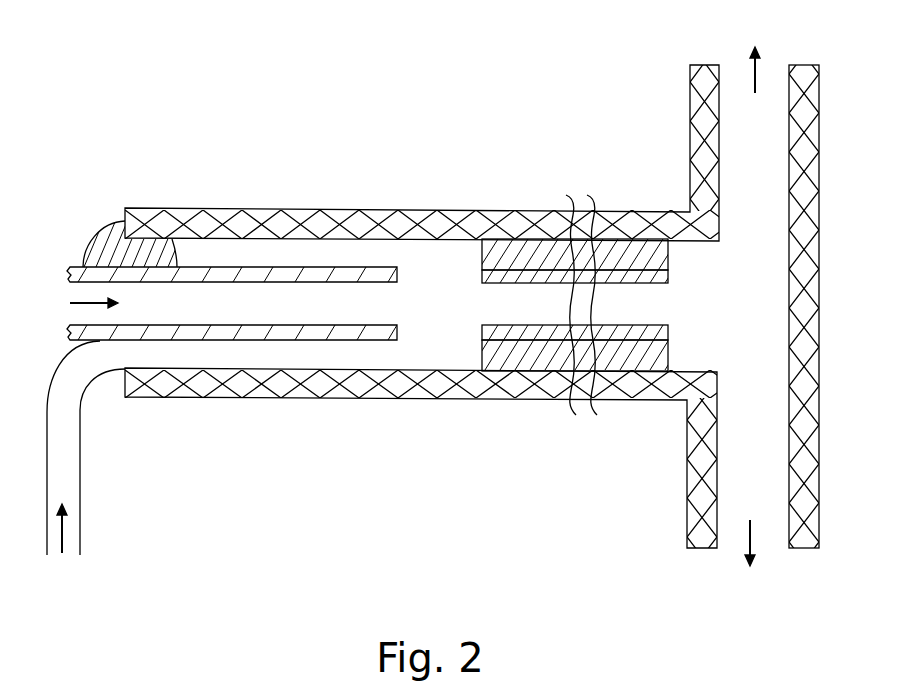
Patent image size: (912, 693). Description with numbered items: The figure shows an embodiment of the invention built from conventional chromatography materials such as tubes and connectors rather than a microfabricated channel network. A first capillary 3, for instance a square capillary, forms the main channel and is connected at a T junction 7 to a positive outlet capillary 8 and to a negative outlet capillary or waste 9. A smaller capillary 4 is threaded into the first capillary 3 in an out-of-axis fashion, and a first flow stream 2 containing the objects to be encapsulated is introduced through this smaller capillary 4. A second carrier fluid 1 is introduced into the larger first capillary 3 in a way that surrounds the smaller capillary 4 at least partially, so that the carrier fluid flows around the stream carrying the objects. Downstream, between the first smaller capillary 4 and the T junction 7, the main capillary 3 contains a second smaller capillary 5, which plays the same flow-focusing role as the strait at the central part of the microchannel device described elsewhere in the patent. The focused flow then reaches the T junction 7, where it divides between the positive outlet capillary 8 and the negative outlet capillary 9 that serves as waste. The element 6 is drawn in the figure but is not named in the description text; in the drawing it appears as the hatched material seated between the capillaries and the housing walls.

The second carrier fluid 1 is at (62, 532).
The first flow stream 2 is at (90, 300).
The first capillary 3 is at (211, 222).
The smaller capillary 4 is at (272, 268).
The second smaller capillary 5 is at (540, 268).
The insulating / sealing material 6 is at (133, 246).
The T junction 7 is at (713, 320).
The positive outlet capillary 8 is at (755, 56).
The negative outlet capillary 9 is at (750, 559).